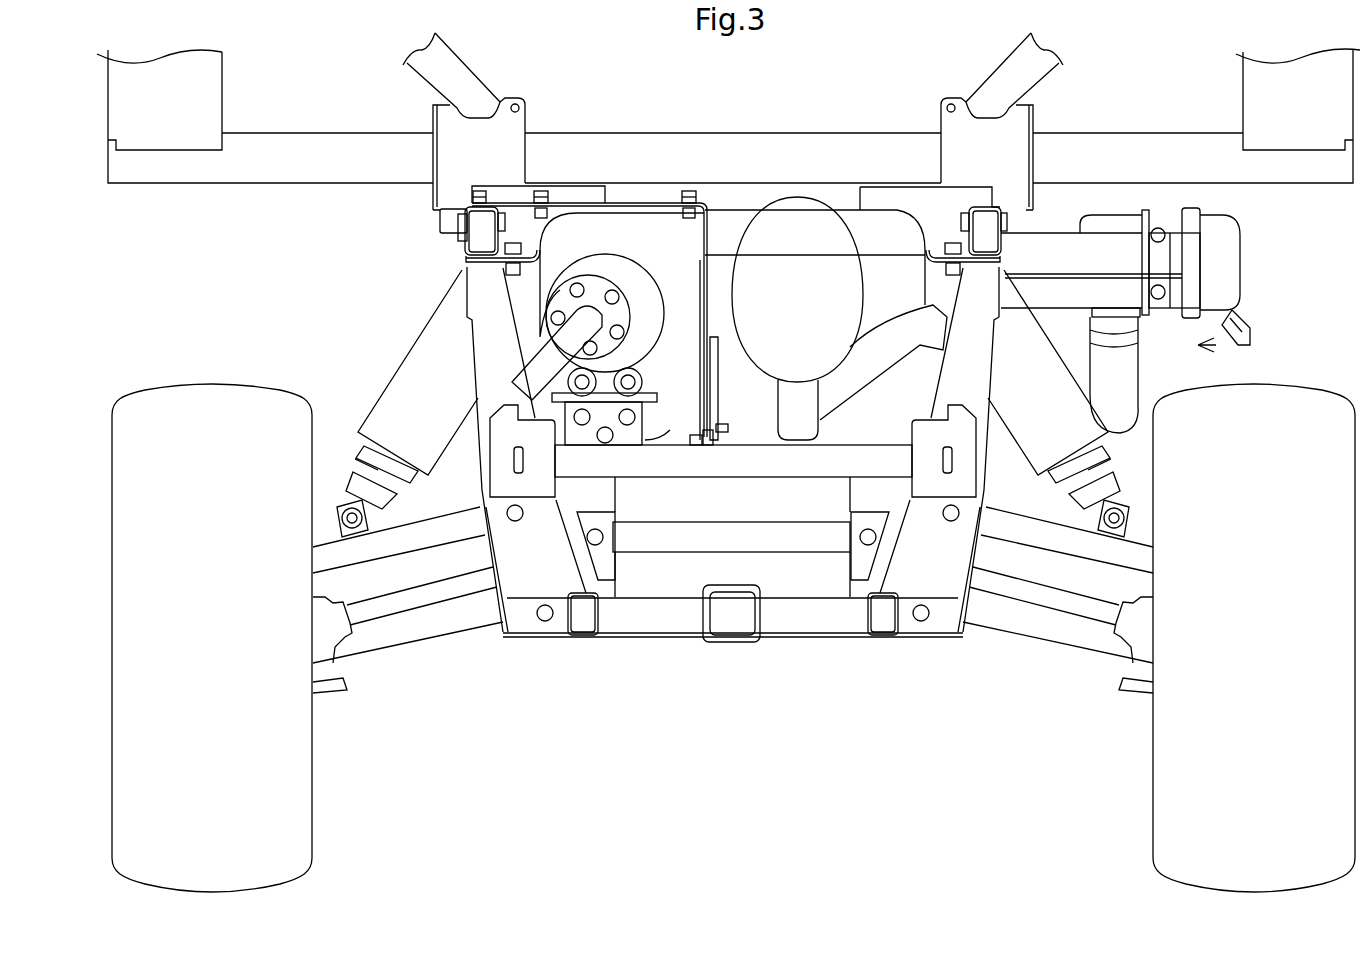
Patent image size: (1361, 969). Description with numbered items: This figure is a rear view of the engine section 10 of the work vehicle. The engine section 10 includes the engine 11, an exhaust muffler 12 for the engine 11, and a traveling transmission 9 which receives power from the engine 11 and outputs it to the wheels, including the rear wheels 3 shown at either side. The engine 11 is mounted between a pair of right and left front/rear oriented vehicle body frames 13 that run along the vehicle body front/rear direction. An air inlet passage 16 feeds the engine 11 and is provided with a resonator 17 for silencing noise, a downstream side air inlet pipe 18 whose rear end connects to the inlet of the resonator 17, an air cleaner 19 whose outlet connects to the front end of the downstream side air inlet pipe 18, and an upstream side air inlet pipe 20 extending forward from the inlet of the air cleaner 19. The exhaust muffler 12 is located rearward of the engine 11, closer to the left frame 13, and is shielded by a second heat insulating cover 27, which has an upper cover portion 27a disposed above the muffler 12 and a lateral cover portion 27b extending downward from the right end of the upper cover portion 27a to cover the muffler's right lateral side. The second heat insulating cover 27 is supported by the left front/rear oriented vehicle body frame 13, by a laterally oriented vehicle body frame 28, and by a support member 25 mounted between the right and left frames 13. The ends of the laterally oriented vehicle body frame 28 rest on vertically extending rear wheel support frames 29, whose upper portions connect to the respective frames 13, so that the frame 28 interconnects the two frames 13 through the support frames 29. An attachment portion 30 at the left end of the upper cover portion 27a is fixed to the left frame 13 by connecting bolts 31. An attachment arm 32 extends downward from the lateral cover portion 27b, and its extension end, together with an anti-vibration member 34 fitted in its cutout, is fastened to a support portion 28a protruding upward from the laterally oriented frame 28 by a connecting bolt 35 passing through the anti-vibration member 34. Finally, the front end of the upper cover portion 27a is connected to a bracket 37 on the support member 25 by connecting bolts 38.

The rear wheel 3 is at (313, 797).
The traveling transmission 9 is at (785, 587).
The engine section 10 is at (741, 192).
The engine 11 is at (882, 228).
The exhaust muffler 12 is at (622, 272).
The front/rear oriented vehicle body frame 13 is at (464, 242).
The air inlet passage 16 is at (1216, 345).
The resonator 17 is at (783, 208).
The downstream side air inlet pipe 18 is at (880, 365).
The air cleaner 19 is at (1238, 262).
The upstream side air inlet pipe 20 is at (1132, 360).
The support member 25 is at (848, 195).
The second heat insulating cover 27 is at (640, 247).
The upper cover portion 27a is at (650, 196).
The lateral cover portion 27b is at (709, 285).
The laterally oriented vehicle body frame 28 is at (733, 501).
The support portion 28a is at (696, 446).
The rear wheel support frame 29 is at (487, 357).
The attachment portion 30 is at (466, 205).
The connecting bolt 31 is at (477, 191).
The attachment arm 32 is at (713, 387).
The anti-vibration member 34 is at (707, 446).
The connecting bolt 35 is at (728, 428).
The bracket 37 is at (543, 214).
The connecting bolt 38 is at (541, 190).